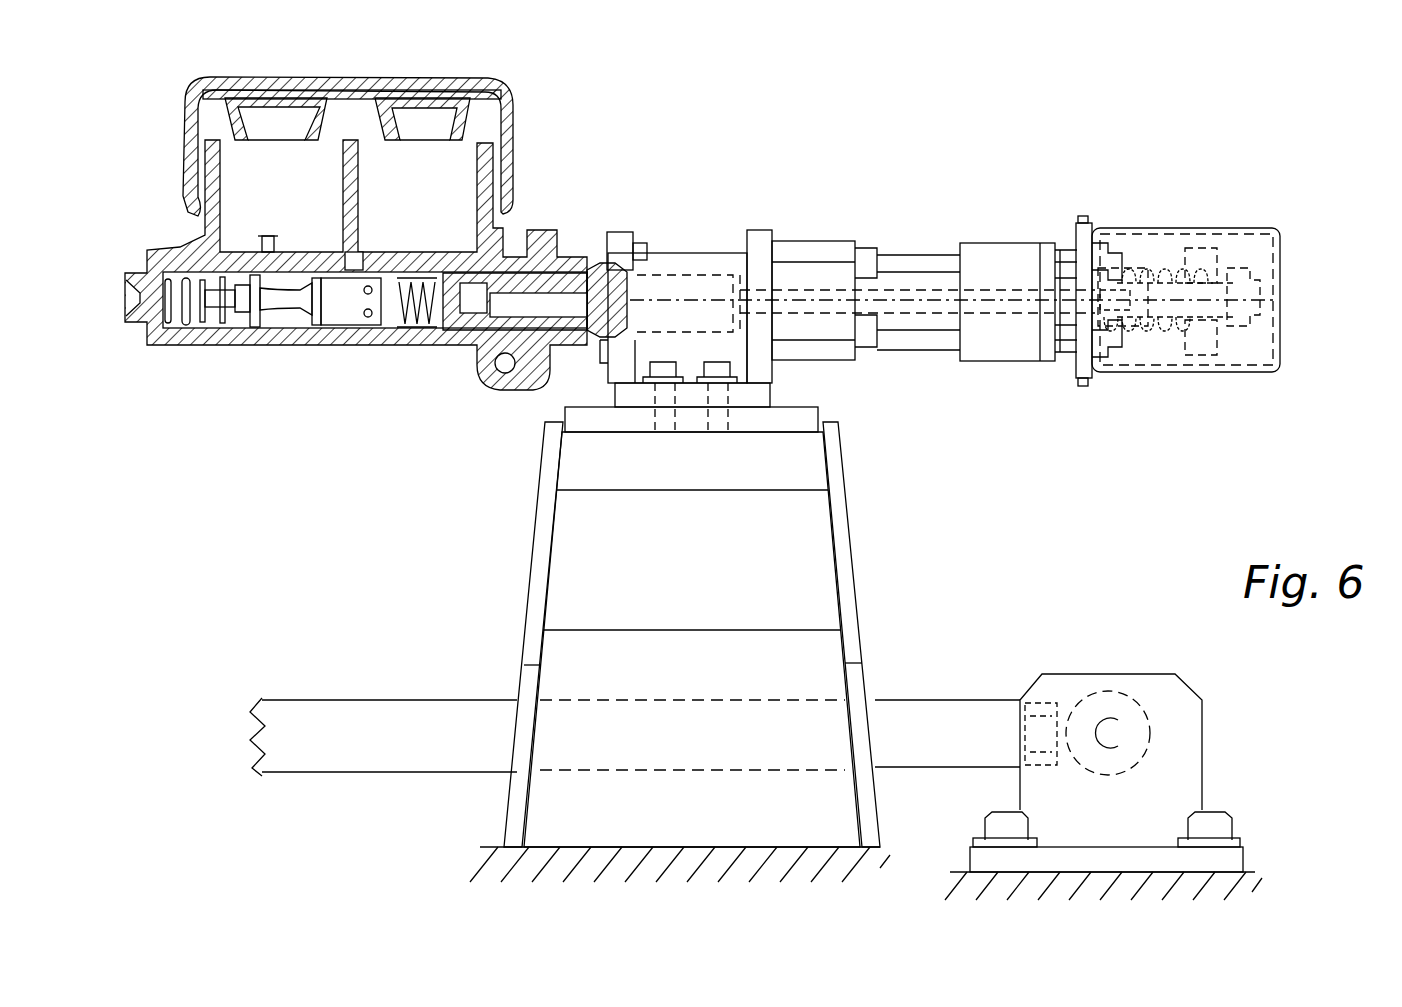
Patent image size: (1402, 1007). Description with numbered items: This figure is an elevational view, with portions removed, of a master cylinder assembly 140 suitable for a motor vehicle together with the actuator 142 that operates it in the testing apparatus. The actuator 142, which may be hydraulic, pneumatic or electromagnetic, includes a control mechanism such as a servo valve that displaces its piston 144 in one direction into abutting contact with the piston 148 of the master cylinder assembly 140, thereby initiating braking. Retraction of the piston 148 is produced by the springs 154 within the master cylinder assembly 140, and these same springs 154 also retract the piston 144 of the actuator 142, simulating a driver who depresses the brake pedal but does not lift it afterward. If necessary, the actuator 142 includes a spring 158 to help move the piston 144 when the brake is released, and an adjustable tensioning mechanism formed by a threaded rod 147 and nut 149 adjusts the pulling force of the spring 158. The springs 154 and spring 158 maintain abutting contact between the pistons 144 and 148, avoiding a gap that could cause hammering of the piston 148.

The master cylinder assembly 140 is at (535, 104).
The actuator 142 is at (843, 190).
The piston 144 is at (598, 242).
The threaded rod 147 is at (1178, 262).
The piston 148 is at (457, 338).
The nut 149 is at (1278, 238).
The springs 154 is at (200, 325).
The spring 158 is at (1150, 330).